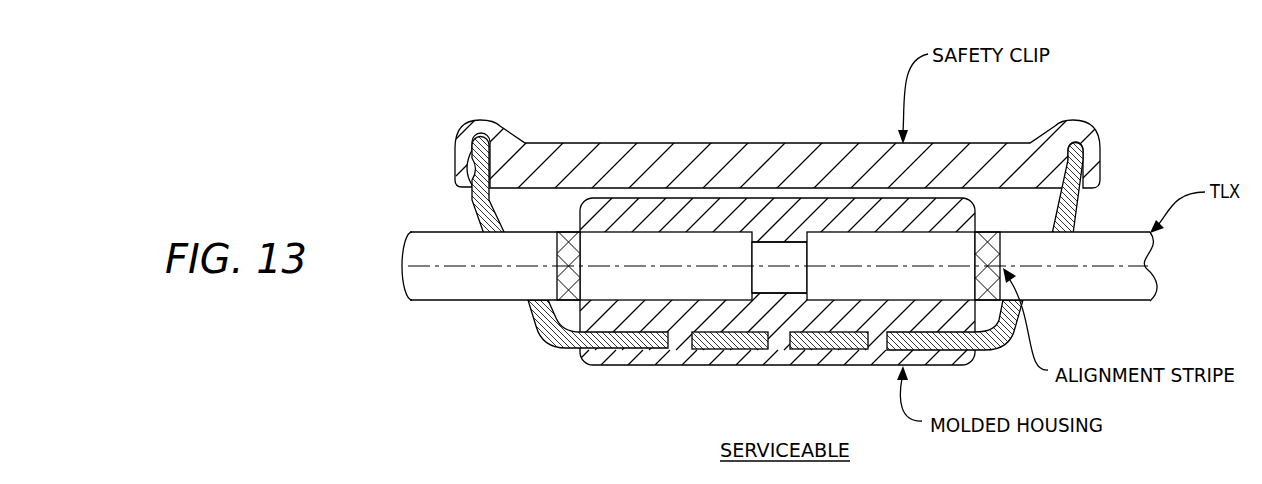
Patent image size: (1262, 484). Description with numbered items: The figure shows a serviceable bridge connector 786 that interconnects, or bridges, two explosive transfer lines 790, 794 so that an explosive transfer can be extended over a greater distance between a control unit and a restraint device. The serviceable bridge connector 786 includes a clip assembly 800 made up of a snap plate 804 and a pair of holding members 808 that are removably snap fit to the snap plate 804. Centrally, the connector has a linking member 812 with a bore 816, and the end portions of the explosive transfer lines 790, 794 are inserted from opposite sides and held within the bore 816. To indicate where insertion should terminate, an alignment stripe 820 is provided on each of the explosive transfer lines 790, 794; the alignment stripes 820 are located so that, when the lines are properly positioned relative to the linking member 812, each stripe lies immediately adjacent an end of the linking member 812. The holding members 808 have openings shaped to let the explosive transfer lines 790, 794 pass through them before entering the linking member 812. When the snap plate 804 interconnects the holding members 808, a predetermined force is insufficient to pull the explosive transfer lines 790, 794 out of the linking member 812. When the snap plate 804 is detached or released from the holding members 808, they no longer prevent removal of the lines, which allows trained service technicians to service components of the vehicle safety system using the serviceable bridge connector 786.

The clip assembly 800 is at (625, 108).
The snap plate 804 is at (556, 155).
The serviceable bridge connector 786 is at (1103, 109).
The holding member 808 is at (483, 215).
The explosive transfer line 790 is at (470, 287).
The explosive transfer line 794 is at (1118, 292).
The linking member 812 is at (680, 333).
The bore 816 is at (782, 286).
The alignment stripe 820 is at (980, 232).